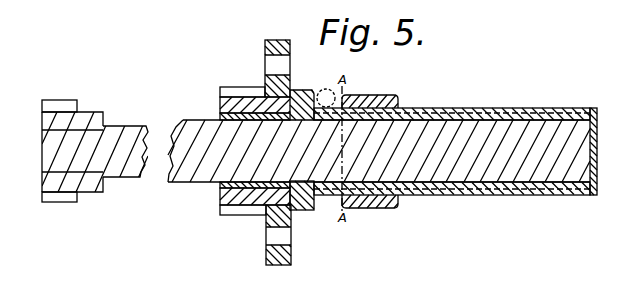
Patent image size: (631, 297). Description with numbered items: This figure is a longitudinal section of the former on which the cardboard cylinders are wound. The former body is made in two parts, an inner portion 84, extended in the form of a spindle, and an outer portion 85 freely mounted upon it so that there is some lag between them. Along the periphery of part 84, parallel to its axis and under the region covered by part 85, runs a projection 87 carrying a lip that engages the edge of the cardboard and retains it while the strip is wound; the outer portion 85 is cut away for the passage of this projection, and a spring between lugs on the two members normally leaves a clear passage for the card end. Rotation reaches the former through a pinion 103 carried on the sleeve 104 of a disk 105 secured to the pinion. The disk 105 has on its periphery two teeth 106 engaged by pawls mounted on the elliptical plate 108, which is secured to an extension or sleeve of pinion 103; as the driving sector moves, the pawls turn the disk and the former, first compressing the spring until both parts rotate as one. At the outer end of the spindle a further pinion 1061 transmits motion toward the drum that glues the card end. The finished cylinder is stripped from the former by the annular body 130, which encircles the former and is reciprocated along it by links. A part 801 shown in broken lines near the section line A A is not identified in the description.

The inner portion of the former 84 is at (127, 128).
The outer portion of the former 85 is at (503, 110).
The projection 87 is at (588, 140).
The pinion 103 is at (236, 212).
The sleeve 104 is at (222, 190).
The disk 105 is at (300, 89).
The teeth 106 is at (78, 185).
The pinion 1061 is at (77, 105).
The elliptical plate 108 is at (265, 49).
The annular body 130 is at (383, 96).
The pin (80 prime, section) 801 is at (324, 89).